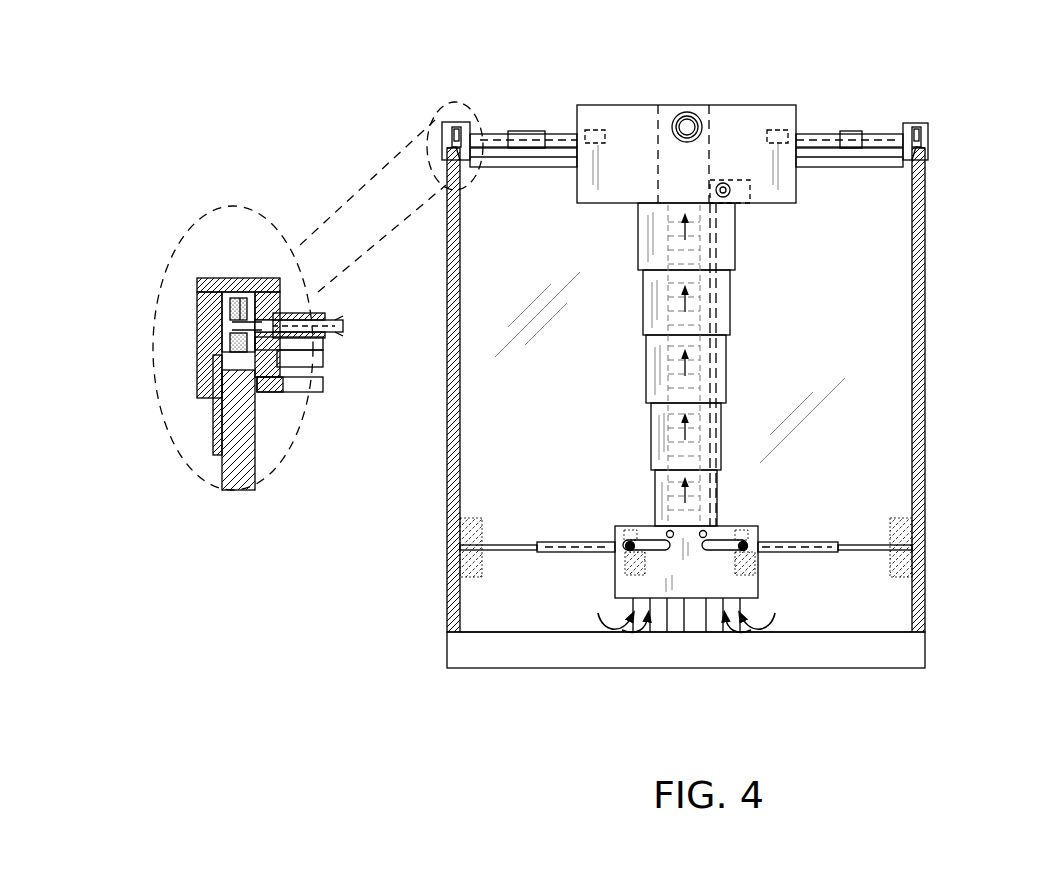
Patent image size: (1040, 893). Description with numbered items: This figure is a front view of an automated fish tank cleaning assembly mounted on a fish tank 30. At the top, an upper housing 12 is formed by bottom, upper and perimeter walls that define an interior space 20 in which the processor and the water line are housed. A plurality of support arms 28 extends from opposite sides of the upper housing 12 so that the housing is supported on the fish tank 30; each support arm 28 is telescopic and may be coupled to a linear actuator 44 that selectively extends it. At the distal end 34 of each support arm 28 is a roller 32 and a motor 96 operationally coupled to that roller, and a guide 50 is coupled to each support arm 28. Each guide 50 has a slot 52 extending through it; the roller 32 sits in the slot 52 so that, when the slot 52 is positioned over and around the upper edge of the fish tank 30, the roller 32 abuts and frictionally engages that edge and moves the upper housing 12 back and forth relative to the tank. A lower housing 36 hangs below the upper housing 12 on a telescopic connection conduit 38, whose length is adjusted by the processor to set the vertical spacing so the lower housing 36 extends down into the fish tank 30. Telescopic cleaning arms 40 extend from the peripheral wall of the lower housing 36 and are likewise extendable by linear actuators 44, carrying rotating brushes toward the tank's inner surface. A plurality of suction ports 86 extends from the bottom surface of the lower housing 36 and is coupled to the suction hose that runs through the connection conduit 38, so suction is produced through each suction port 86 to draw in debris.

The upper housing 12 is at (726, 105).
The interior space 20 is at (733, 142).
The support arms 28 is at (518, 130).
The fish tank 30 is at (897, 245).
The rollers 32 is at (452, 125).
The distal end 34 is at (283, 312).
The lower housing 36 is at (748, 585).
The connection conduit 38 is at (725, 295).
The cleaning arms 40 is at (553, 542).
The linear actuator 44 is at (598, 130).
The guides 50 is at (925, 127).
The slot 52 is at (213, 350).
The suction ports 86 is at (634, 632).
The motors 96 is at (260, 280).